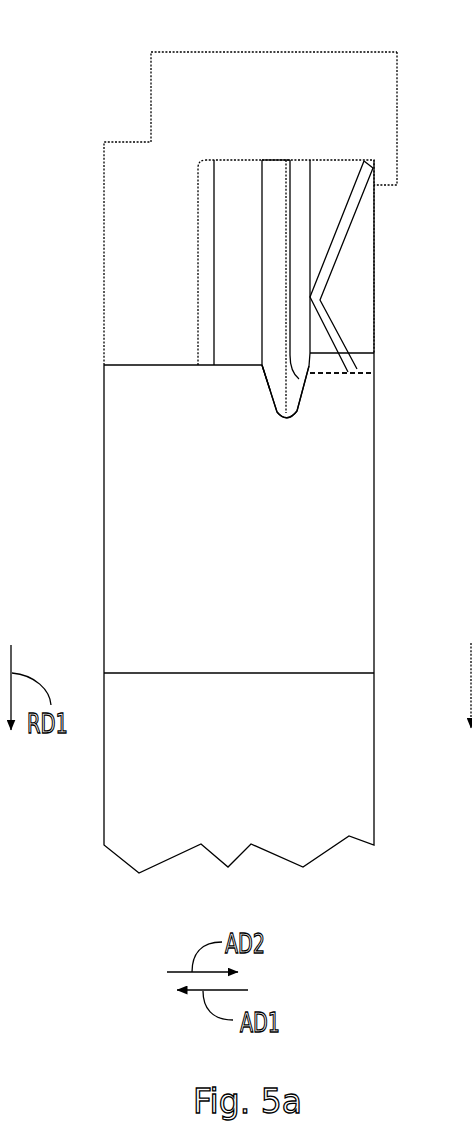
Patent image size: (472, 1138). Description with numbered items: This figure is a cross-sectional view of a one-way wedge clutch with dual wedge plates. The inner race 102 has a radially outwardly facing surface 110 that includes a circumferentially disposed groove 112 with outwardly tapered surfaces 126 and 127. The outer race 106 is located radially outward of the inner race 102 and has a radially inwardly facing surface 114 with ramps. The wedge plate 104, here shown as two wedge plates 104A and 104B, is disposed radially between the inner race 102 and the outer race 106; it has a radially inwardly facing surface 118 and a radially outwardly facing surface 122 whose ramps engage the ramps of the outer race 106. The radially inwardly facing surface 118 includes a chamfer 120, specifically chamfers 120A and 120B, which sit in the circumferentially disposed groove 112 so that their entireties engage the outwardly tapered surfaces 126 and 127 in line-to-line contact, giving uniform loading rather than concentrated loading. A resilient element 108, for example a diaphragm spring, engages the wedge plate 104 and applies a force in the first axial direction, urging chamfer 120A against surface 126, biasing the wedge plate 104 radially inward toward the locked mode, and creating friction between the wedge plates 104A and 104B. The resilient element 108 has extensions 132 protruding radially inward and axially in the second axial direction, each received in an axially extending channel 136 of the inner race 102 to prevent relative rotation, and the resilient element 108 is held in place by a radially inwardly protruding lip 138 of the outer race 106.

The inner race 102 is at (258, 608).
The wedge plate 104 is at (243, 230).
The wedge plate 104A is at (273, 195).
The wedge plate 104B is at (295, 183).
The outer race 106 is at (303, 97).
The resilient element 108 is at (334, 259).
The radially outwardly facing surface 110 is at (232, 325).
The circumferentially disposed groove 112 is at (293, 443).
The radially inwardly facing surface 114 is at (321, 180).
The radially inwardly facing surface 118 is at (236, 418).
The chamfer 120 is at (240, 392).
The chamfer 120A is at (272, 401).
The chamfer 120B is at (308, 377).
The radially outwardly facing surface 122 is at (273, 150).
The outwardly tapered surface 126 is at (265, 373).
The outwardly tapered surface 127 is at (290, 290).
The extension 132 is at (355, 352).
The axially extending channel 136 is at (368, 363).
The lip 138 is at (399, 152).